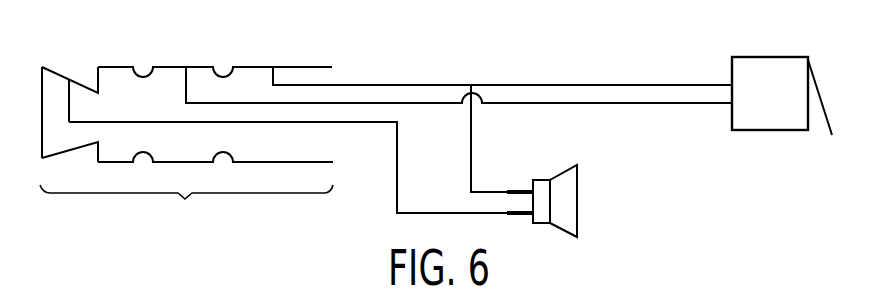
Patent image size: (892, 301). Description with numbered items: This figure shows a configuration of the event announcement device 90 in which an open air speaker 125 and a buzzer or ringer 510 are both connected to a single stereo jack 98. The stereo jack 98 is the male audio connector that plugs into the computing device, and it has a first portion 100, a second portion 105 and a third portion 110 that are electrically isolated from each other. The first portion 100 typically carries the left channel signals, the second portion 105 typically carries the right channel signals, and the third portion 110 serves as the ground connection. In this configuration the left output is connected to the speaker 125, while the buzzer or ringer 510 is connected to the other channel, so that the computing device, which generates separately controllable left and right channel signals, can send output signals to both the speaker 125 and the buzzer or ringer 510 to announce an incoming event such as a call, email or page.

The single stereo jack 98 is at (186, 193).
The first portion 100 is at (73, 82).
The second portion 105 is at (186, 67).
The third portion 110 is at (273, 67).
The event announcement device 90 is at (490, 59).
The open air speaker 125 is at (553, 178).
The buzzer or ringer 510 is at (732, 70).